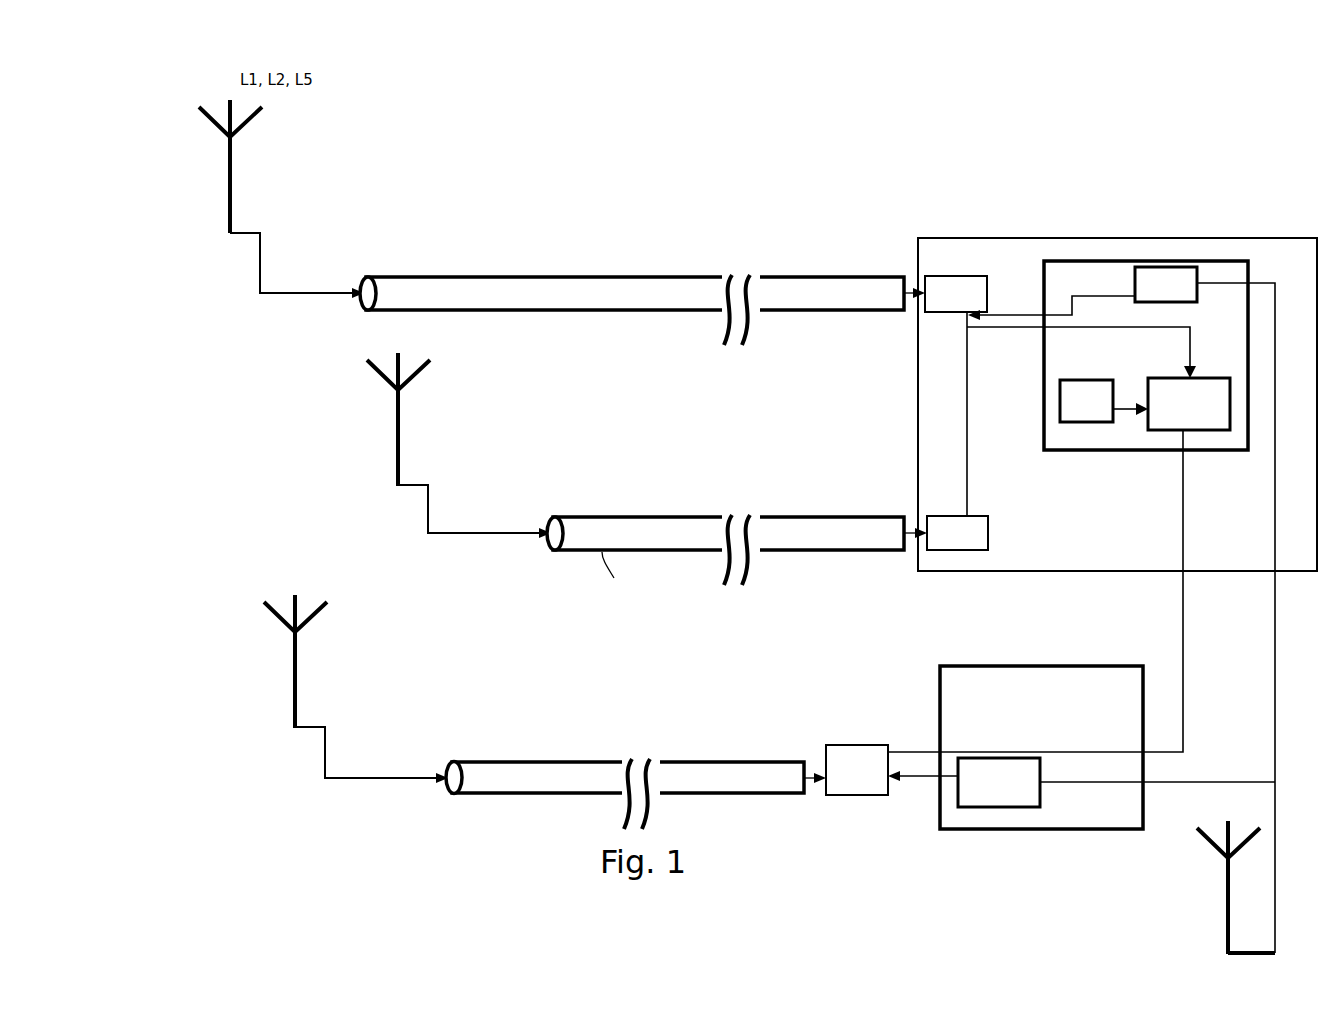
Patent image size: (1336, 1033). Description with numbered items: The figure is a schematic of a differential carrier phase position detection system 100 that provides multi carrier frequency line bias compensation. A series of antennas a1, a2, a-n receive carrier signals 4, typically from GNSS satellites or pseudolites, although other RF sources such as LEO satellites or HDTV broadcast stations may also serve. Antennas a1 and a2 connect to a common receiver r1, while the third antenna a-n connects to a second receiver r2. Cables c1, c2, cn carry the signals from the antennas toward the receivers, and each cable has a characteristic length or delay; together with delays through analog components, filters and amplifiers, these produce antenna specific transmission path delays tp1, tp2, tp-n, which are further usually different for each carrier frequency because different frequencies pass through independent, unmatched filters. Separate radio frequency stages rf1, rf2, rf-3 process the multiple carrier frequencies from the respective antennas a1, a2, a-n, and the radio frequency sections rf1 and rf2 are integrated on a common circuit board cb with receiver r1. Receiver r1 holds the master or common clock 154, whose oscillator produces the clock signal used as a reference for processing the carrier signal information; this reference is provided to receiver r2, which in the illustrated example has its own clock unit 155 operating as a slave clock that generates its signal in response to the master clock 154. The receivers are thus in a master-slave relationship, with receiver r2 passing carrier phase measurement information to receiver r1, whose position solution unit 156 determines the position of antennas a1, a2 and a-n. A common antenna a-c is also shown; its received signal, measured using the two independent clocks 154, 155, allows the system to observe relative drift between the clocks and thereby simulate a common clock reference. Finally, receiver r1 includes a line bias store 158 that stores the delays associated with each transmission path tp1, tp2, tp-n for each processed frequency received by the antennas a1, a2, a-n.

The carrier signals 4 is at (162, 132).
The position detection system 100 is at (988, 170).
The common clock 154 is at (1168, 267).
The clock unit 155 is at (1000, 807).
The position solution unit 156 is at (1198, 430).
The line bias store 158 is at (1090, 422).
The antenna a1 is at (232, 147).
The antenna a2 is at (398, 423).
The third antenna a-n is at (295, 665).
The common antenna a-c is at (1228, 890).
The cable c1 is at (490, 277).
The cable c2 is at (585, 518).
The cable cn is at (528, 762).
The receiver r1 is at (1112, 350).
The second receiver r2 is at (1081, 737).
The common circuit board cb is at (1117, 571).
The radio frequency stage rf1 is at (956, 294).
The radio frequency stage rf2 is at (957, 533).
The radio frequency stage rf-3 is at (857, 770).
The transmission path delay tp1 is at (905, 213).
The transmission path delay tp2 is at (905, 470).
The transmission path delay tp-n is at (804, 720).